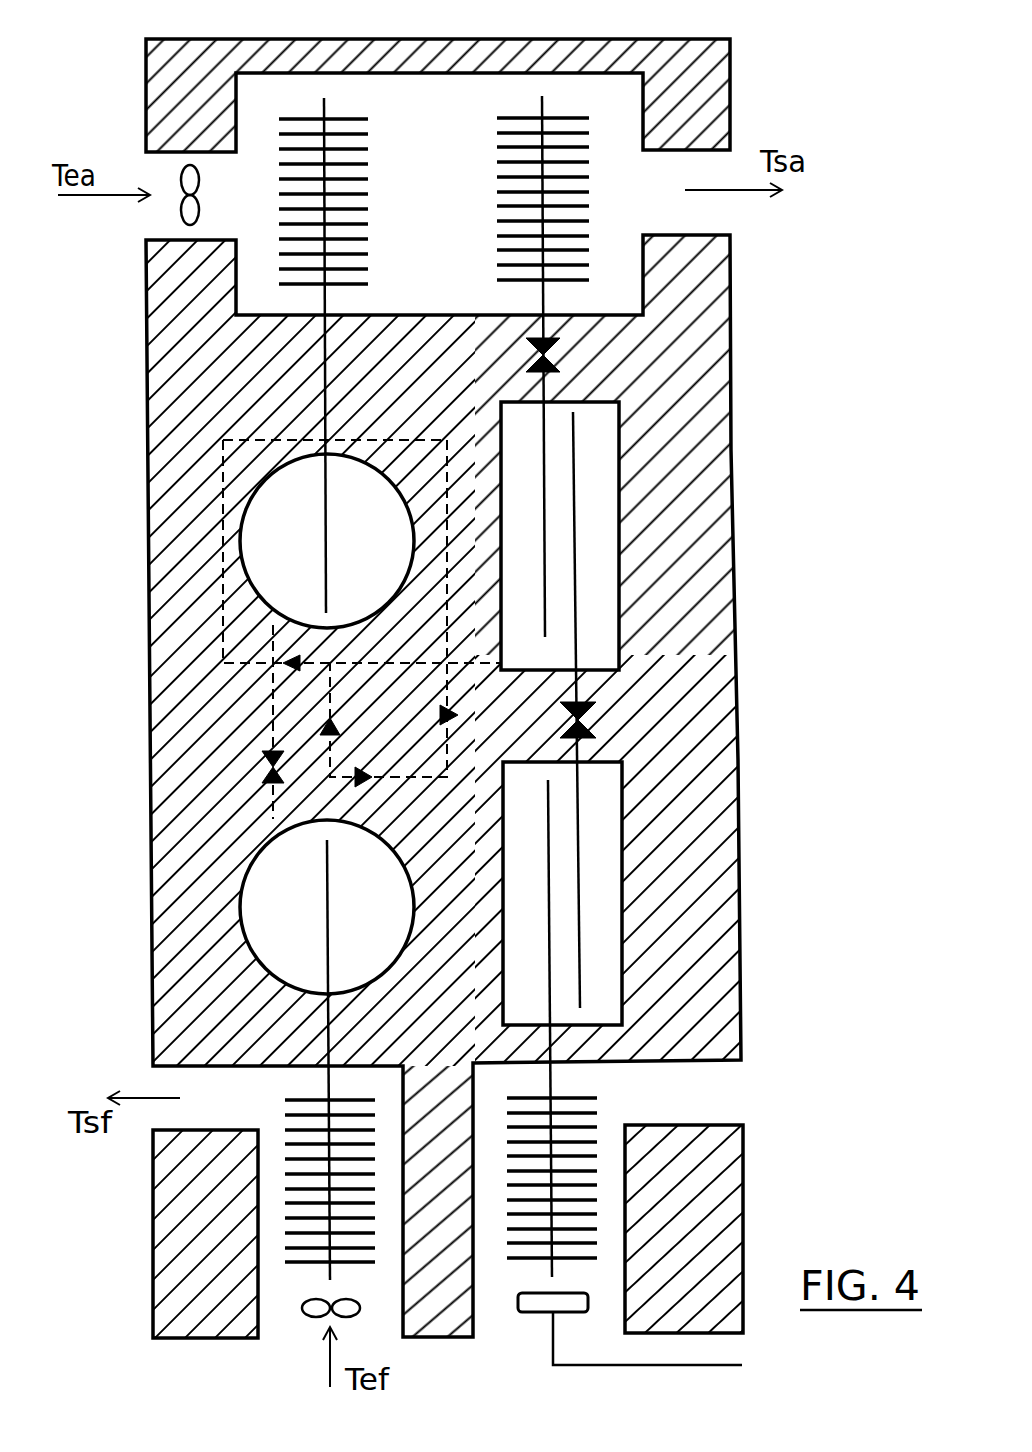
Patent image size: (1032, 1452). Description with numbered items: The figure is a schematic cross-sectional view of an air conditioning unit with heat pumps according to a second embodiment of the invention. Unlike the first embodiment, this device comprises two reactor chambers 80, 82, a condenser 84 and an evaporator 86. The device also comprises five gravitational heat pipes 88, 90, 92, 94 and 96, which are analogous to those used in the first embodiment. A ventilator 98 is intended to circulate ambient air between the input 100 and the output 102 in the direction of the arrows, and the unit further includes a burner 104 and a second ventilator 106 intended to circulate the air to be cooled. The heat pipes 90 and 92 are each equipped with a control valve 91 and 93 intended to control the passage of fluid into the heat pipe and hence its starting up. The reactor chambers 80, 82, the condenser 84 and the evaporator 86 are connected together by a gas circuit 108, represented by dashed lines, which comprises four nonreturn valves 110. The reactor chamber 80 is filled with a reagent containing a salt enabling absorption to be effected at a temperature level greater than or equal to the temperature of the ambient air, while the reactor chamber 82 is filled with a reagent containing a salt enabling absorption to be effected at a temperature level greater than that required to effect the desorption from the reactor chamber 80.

The reactor chamber 80 is at (503, 553).
The reactor chamber 82 is at (505, 884).
The condenser 84 is at (243, 540).
The evaporator 86 is at (243, 906).
The gravitational heat pipe 88 is at (330, 100).
The gravitational heat pipe 90 is at (546, 100).
The control valve 91 is at (553, 357).
The gravitational heat pipe 92 is at (576, 590).
The control valve 93 is at (588, 720).
The gravitational heat pipe 94 is at (546, 935).
The gravitational heat pipe 96 is at (333, 936).
The ventilator 98 is at (200, 195).
The input 100 is at (165, 240).
The output 102 is at (712, 235).
The burner 104 is at (563, 1314).
The second ventilator 106 is at (308, 1318).
The gas circuit 108 is at (228, 550).
The nonreturn valves 110 is at (302, 670).